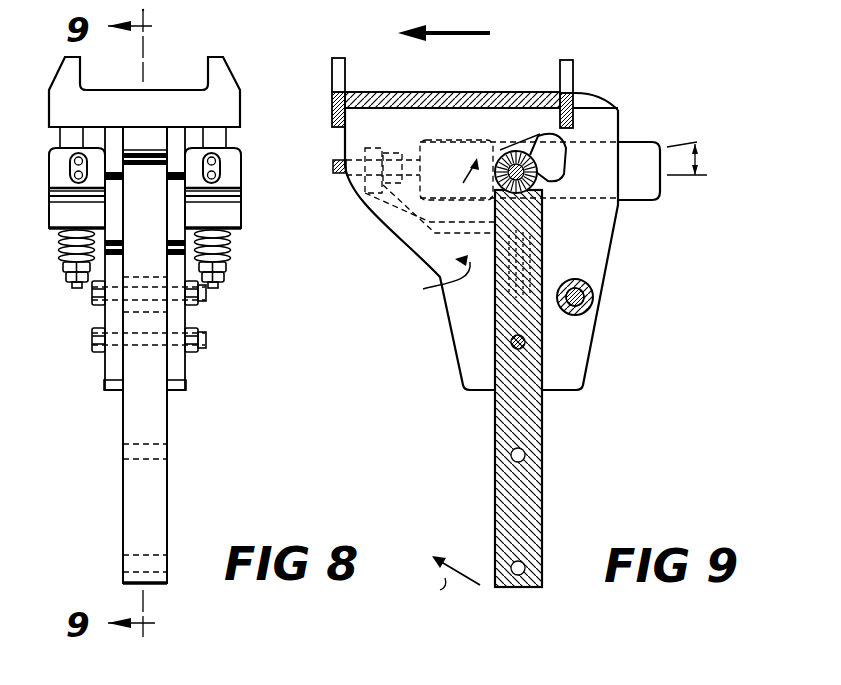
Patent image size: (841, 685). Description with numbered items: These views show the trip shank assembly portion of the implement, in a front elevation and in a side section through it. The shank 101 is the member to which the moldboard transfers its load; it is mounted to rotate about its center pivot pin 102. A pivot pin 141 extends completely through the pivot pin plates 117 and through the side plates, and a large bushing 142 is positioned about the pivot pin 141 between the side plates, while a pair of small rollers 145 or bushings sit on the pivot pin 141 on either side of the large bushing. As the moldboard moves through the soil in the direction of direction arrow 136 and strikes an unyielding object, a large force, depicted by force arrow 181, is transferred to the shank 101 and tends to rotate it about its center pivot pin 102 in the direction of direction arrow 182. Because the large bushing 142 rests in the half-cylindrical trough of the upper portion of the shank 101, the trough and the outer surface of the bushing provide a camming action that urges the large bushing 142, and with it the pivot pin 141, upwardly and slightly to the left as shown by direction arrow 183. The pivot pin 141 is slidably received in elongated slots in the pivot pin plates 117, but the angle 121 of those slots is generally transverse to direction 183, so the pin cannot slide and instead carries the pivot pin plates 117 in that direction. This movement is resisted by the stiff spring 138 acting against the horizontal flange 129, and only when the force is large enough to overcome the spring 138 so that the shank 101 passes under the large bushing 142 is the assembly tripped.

In FIG. 8, the shank 101 is at (128, 493).
In FIG. 9, the shank 101 is at (543, 477).
In FIG. 9, the center pivot pin 102 is at (525, 340).
In FIG. 9, the pivot pin plate 117 is at (660, 192).
In FIG. 9, the angle 121 is at (716, 110).
In FIG. 9, the horizontal flange 129 is at (543, 225).
In FIG. 9, the direction arrow 136 is at (453, 40).
In FIG. 9, the spring 138 is at (543, 257).
In FIG. 9, the pivot pin 141 is at (500, 152).
In FIG. 9, the large bushing 142 is at (538, 174).
In FIG. 8, the small rollers 145 is at (145, 180).
In FIG. 9, the force arrow 181 is at (450, 586).
In FIG. 9, the direction arrow 182 is at (433, 285).
In FIG. 9, the direction arrow 183 is at (456, 170).